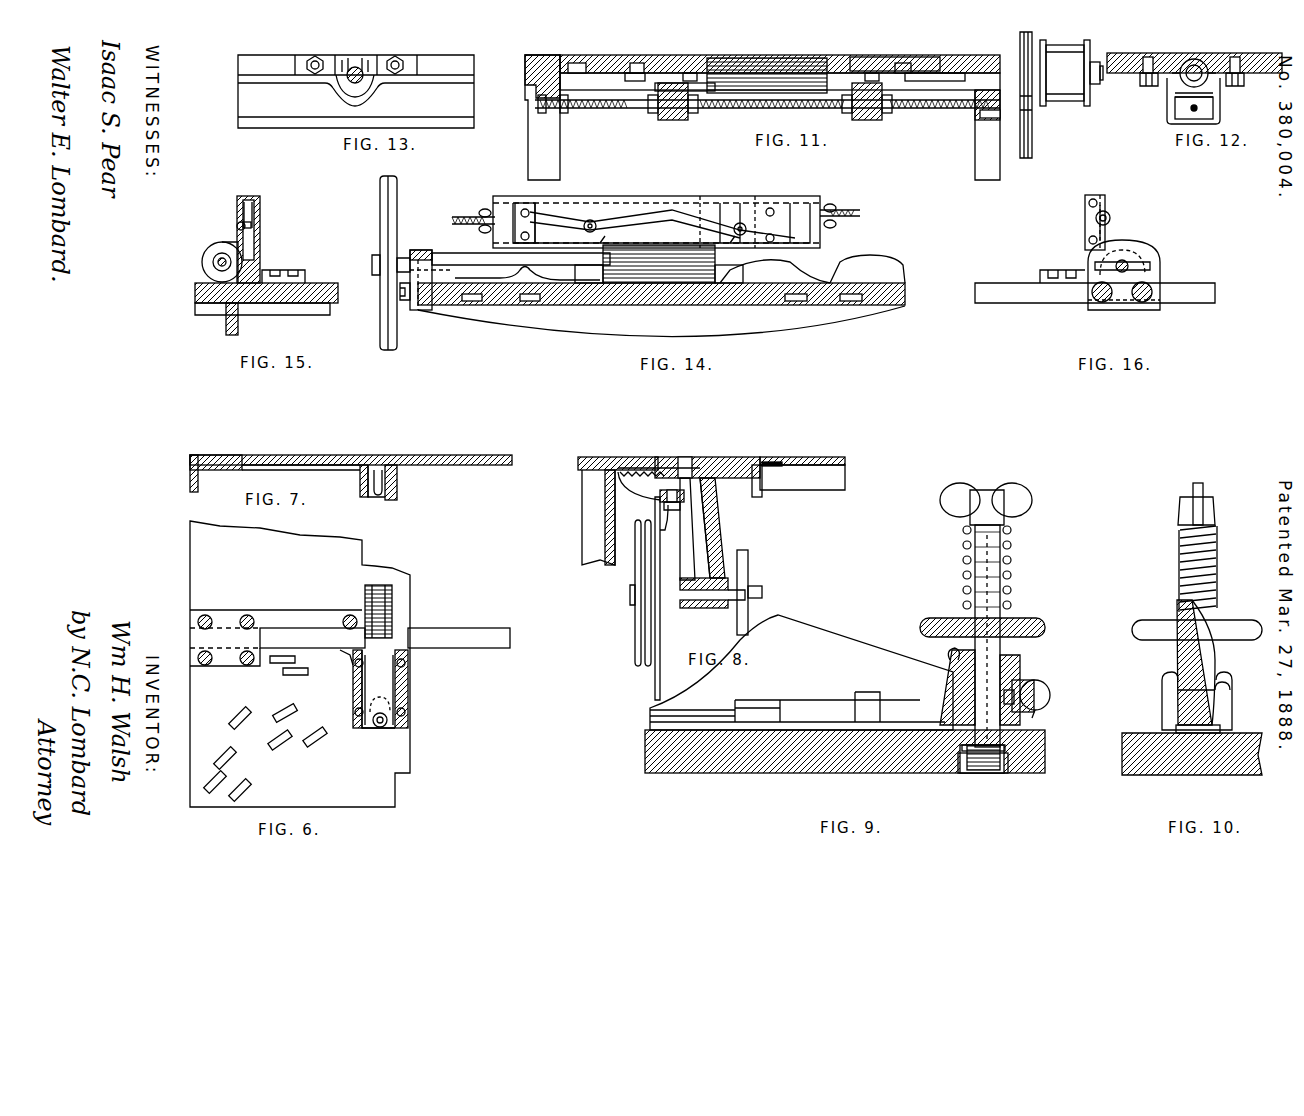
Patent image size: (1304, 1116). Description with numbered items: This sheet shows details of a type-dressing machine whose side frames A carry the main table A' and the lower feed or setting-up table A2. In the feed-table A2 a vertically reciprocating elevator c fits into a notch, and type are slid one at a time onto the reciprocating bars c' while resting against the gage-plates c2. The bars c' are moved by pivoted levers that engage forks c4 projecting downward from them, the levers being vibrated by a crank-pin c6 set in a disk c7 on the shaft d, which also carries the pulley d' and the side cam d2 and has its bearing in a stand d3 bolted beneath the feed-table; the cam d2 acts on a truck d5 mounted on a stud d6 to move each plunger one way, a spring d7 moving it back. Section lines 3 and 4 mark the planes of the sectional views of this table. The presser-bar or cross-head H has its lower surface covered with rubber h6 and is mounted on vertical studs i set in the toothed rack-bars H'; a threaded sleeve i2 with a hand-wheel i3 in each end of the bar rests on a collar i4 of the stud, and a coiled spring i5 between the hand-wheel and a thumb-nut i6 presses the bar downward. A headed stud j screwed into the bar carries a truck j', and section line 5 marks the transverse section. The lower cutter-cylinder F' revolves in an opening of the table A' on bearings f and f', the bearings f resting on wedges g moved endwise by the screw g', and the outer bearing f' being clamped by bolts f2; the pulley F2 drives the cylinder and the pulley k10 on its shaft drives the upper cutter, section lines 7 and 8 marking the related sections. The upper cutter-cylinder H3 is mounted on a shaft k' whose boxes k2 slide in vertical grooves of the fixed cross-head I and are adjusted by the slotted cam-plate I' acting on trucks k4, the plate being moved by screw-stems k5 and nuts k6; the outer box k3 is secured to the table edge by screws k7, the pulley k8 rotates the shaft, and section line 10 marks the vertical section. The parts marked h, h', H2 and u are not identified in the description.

In FIG. 13, the side frames A is at (356, 91).
In FIG. 11, the side frames A is at (542, 117).
In FIG. 12, the side frames A is at (1194, 59).
In FIG. 8, the side frames A is at (598, 517).
In FIG. 11, the main table A' is at (893, 51).
In FIG. 15, the main table A' is at (266, 300).
In FIG. 14, the main table A' is at (661, 310).
In FIG. 16, the main table A' is at (1095, 286).
In FIG. 9, the main table A' is at (845, 764).
In FIG. 10, the main table A' is at (1192, 744).
In FIG. 7, the feed or setting-up table A2 is at (240, 480).
In FIG. 6, the feed or setting-up table A2 is at (218, 696).
In FIG. 8, the feed or setting-up table A2 is at (798, 478).
In FIG. 11, the cutter-cylinder F' is at (767, 62).
In FIG. 12, the cutter-cylinder F' is at (1193, 77).
In FIG. 11, the pulley F2 is at (1071, 73).
In FIG. 11, the adjustable bearings f is at (769, 86).
In FIG. 13, the bearing f' is at (358, 59).
In FIG. 11, the bearing f' is at (974, 46).
In FIG. 13, the clamping-bolts f2 is at (316, 57).
In FIG. 11, the wedges g is at (770, 107).
In FIG. 11, the screw g' is at (767, 109).
In FIG. 11, the cam h is at (784, 56).
In FIG. 14, the cam h is at (642, 276).
In FIG. 11, the slot h' is at (781, 56).
In FIG. 10, the rubber h6 is at (1222, 728).
In FIG. 11, the presser-bar or cross-head H is at (935, 57).
In FIG. 9, the presser-bar or cross-head H is at (801, 672).
In FIG. 10, the presser-bar or cross-head H is at (1197, 665).
In FIG. 11, the toothed rack-bars H' is at (780, 60).
In FIG. 14, the toothed rack-bars H' is at (677, 293).
In FIG. 9, the nut H2 is at (1000, 750).
In FIG. 15, the upper cutter-cylinder H3 is at (222, 242).
In FIG. 14, the upper cutter-cylinder H3 is at (642, 275).
In FIG. 16, the upper cutter-cylinder H3 is at (1135, 250).
In FIG. 15, the fixed cross-head I is at (256, 239).
In FIG. 14, the fixed cross-head I is at (671, 230).
In FIG. 16, the fixed cross-head I is at (1083, 222).
In FIG. 15, the slotted cam-plate I' is at (238, 203).
In FIG. 14, the slotted cam-plate I' is at (551, 209).
In FIG. 9, the vertical studs i is at (987, 636).
In FIG. 10, the vertical studs i is at (1204, 490).
In FIG. 9, the threaded sleeve i2 is at (1000, 650).
In FIG. 9, the hand-wheel i3 is at (1040, 629).
In FIG. 10, the hand-wheel i3 is at (1235, 623).
In FIG. 9, the collars i4 is at (983, 736).
In FIG. 9, the coiled springs i5 is at (1005, 575).
In FIG. 10, the coiled springs i5 is at (1217, 556).
In FIG. 9, the thumb-nuts i6 is at (986, 504).
In FIG. 10, the thumb-nuts i6 is at (1213, 512).
In FIG. 9, the headed stud j is at (1031, 692).
In FIG. 9, the truck j' is at (1045, 719).
In FIG. 14, the shaft k' is at (521, 248).
In FIG. 14, the adjustable boxes k2 is at (659, 273).
In FIG. 14, the box k3 is at (418, 250).
In FIG. 16, the box k3 is at (1150, 266).
In FIG. 15, the trucks k4 is at (238, 225).
In FIG. 14, the trucks k4 is at (595, 222).
In FIG. 14, the screw-stems k5 is at (462, 215).
In FIG. 16, the screw-stems k5 is at (1106, 212).
In FIG. 14, the nuts k6 is at (485, 208).
In FIG. 16, the nuts k6 is at (1110, 222).
In FIG. 14, the screws k7 is at (406, 302).
In FIG. 16, the screws k7 is at (1098, 300).
In FIG. 14, the pulley k8 is at (373, 263).
In FIG. 11, the pulley k10 is at (1056, 110).
In FIG. 14, the link u is at (600, 244).
In FIG. 6, the elevator c is at (377, 602).
In FIG. 7, the reciprocating bars c' is at (398, 468).
In FIG. 6, the reciprocating bars c' is at (385, 618).
In FIG. 8, the reciprocating bars c' is at (773, 446).
In FIG. 7, the gage-plates c2 is at (250, 453).
In FIG. 6, the gage-plates c2 is at (232, 618).
In FIG. 8, the gage-plates c2 is at (778, 460).
In FIG. 8, the forks c4 is at (760, 495).
In FIG. 8, the crank-pin c6 is at (760, 592).
In FIG. 8, the disk c7 is at (748, 565).
In FIG. 8, the shaft d is at (712, 593).
In FIG. 8, the pulley d' is at (636, 593).
In FIG. 6, the cam d2 is at (374, 689).
In FIG. 8, the cam d2 is at (660, 547).
In FIG. 8, the stand d3 is at (702, 512).
In FIG. 6, the truck d5 is at (376, 727).
In FIG. 8, the truck d5 is at (662, 499).
In FIG. 6, the stud d6 is at (384, 724).
In FIG. 8, the stud d6 is at (668, 481).
In FIG. 8, the spring d7 is at (648, 466).
In FIG. 6, the section line 3 is at (535, 636).
In FIG. 6, the section line 4 is at (380, 830).
In FIG. 9, the section line 5 is at (715, 785).
In FIG. 11, the section line 7 is at (651, 160).
In FIG. 11, the section line 8 is at (1015, 130).
In FIG. 14, the section line 10 is at (727, 352).